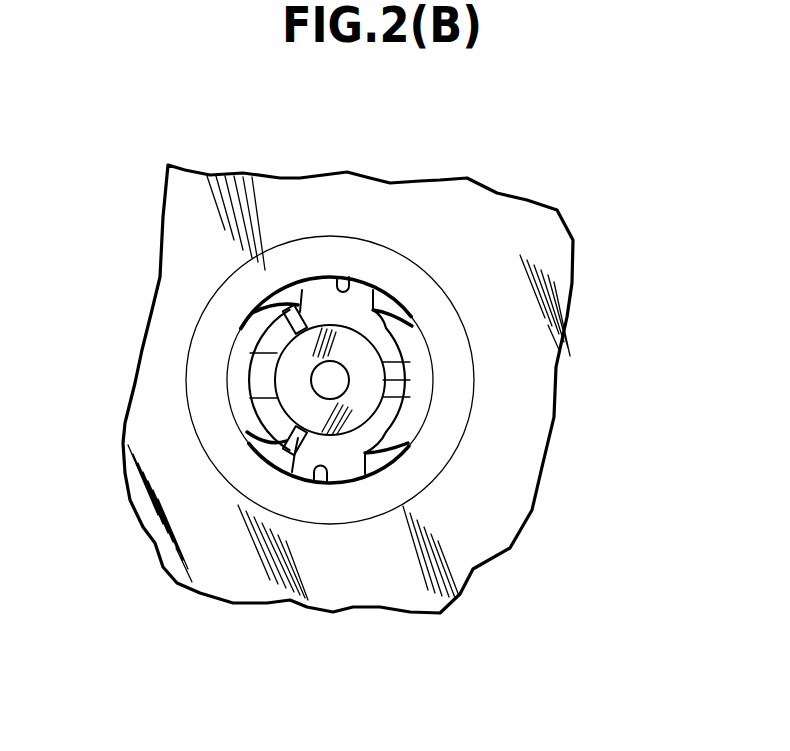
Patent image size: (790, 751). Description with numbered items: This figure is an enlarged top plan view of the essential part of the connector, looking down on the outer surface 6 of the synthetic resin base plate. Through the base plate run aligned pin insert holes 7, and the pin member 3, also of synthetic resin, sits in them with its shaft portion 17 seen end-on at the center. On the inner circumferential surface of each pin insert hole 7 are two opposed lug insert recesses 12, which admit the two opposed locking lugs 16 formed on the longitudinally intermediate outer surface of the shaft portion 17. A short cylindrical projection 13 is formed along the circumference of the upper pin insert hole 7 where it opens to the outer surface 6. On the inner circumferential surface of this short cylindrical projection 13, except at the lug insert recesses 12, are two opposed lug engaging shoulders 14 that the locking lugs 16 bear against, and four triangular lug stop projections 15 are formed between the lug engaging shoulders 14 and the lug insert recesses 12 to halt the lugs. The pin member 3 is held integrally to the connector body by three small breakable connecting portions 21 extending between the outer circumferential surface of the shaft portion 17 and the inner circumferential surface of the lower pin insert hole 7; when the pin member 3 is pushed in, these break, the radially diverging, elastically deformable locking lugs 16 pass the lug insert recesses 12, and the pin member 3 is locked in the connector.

The pin member 3 is at (353, 327).
The outer surface 6 is at (530, 352).
The pin insert hole 7 is at (352, 458).
The lug insert recess 12 is at (355, 292).
The short cylindrical projection 13 is at (378, 503).
The lug engaging shoulder 14 is at (407, 322).
The triangular lug stop projection 15 is at (387, 293).
The locking lug 16 is at (252, 380).
The shaft portion 17 is at (288, 352).
The breakable connecting portion 21 is at (301, 305).